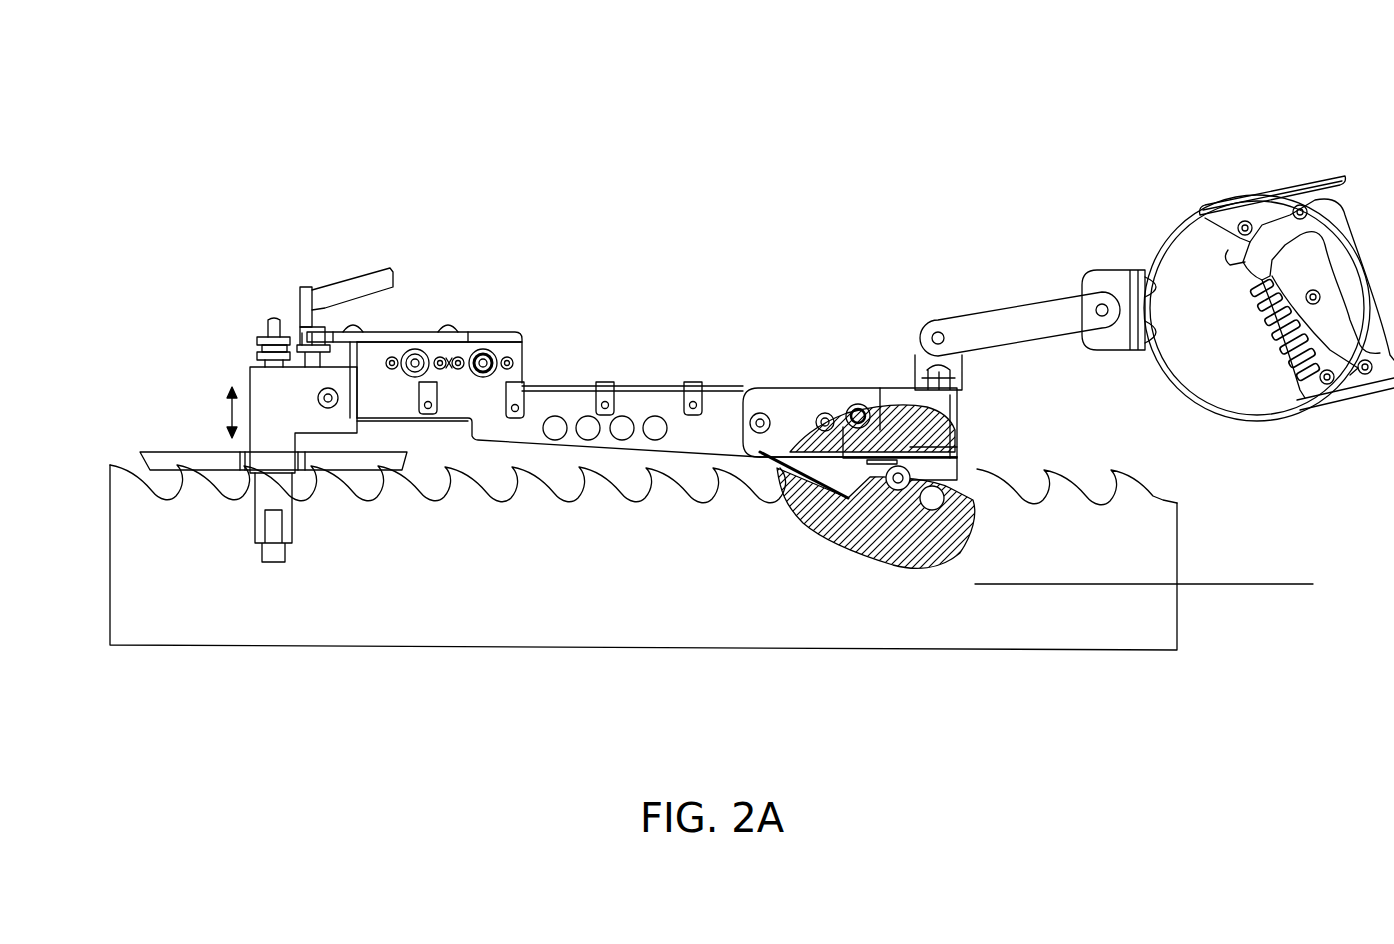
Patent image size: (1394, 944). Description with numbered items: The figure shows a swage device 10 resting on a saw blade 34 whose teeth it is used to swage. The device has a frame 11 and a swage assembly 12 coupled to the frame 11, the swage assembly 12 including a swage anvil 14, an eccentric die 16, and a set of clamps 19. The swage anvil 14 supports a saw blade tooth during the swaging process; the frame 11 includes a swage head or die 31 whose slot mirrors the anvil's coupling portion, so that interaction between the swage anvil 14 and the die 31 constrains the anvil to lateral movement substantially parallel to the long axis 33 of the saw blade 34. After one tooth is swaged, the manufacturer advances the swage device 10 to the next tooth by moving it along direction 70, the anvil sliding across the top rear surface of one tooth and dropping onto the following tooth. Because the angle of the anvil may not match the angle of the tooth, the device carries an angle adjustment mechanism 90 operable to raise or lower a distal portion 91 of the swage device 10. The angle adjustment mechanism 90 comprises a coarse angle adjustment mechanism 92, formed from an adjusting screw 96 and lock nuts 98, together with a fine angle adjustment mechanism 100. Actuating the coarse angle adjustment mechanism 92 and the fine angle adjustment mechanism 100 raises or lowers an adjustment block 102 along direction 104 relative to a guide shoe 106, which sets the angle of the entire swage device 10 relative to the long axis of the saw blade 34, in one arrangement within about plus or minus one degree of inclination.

The swage device 10 is at (970, 204).
The frame 11 is at (897, 385).
The swage assembly 12 is at (1034, 423).
The swage anvil 14 is at (912, 474).
The eccentric die 16 is at (860, 540).
The set of clamps 19 is at (943, 507).
The swage head or die 31 is at (956, 407).
The long axis of the saw blade 33 is at (1237, 584).
The saw blade 34 is at (1178, 535).
The direction of advancement 70 is at (690, 285).
The angle adjustment mechanism 90 is at (342, 150).
The distal portion 91 is at (250, 208).
The coarse angle adjustment mechanism 92 is at (235, 297).
The adjusting screw 96 is at (272, 322).
The lock nuts 98 is at (258, 340).
The fine angle adjustment mechanism 100 is at (405, 258).
The adjustment block 102 is at (335, 412).
The direction of block adjustment 104 is at (228, 413).
The guide shoe 106 is at (157, 468).